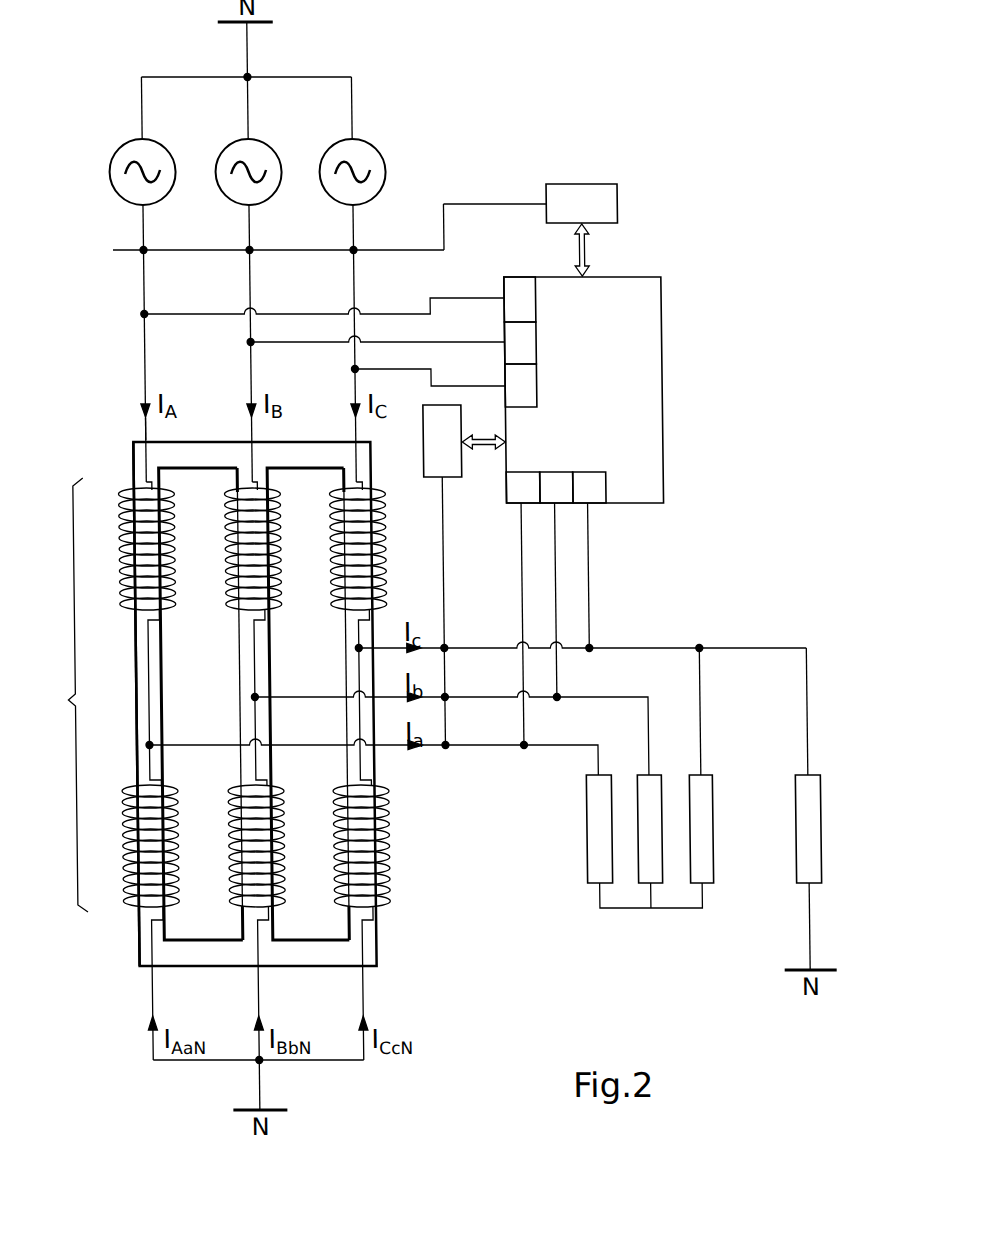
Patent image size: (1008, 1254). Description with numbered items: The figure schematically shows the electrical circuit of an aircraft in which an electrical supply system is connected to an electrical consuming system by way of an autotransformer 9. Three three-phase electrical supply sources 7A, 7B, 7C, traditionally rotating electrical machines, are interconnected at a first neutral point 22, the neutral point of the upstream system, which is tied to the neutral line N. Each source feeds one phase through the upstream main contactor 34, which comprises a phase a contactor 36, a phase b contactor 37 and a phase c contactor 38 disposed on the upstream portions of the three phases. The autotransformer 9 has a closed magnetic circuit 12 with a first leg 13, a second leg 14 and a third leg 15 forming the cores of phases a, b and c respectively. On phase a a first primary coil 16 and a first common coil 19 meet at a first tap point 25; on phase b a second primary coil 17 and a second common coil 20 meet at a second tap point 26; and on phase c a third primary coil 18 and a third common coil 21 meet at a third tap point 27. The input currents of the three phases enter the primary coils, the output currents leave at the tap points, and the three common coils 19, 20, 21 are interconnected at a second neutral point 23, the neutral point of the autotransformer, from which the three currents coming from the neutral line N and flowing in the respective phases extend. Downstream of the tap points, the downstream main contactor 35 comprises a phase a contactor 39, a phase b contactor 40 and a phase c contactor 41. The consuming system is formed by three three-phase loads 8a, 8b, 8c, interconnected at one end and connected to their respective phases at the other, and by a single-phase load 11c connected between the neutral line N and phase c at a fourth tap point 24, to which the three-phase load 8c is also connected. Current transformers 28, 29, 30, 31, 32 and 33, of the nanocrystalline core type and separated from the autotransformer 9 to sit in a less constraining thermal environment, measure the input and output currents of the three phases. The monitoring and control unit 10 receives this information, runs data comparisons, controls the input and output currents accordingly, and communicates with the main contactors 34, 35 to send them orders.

The three-phase electrical supply source 7A is at (161, 148).
The three-phase electrical supply source 7B is at (267, 148).
The three-phase electrical supply source 7C is at (371, 148).
The three-phase electrical load 8a is at (577, 835).
The three-phase electrical load 8b is at (651, 774).
The three-phase electrical load 8c is at (703, 836).
The autotransformer 9 is at (63, 695).
The monitoring and control unit 10 is at (658, 290).
The single-phase load 11c is at (786, 790).
The magnetic circuit 12 is at (128, 413).
The first leg 13 is at (129, 645).
The second leg 14 is at (232, 628).
The third leg 15 is at (343, 770).
The first primary coil 16 is at (112, 480).
The second primary coil 17 is at (222, 481).
The third primary coil 18 is at (326, 481).
The first common coil 19 is at (109, 913).
The second common coil 20 is at (214, 913).
The third common coil 21 is at (314, 913).
The first neutral point 22 is at (251, 74).
The second neutral point 23 is at (244, 1063).
The fourth tap point 24 is at (692, 646).
The first tap point 25 is at (133, 745).
The second tap point 26 is at (240, 698).
The third tap point 27 is at (345, 648).
The current transformer 28 is at (532, 296).
The current transformer 29 is at (532, 340).
The current transformer 30 is at (532, 384).
The current transformer 31 is at (517, 470).
The current transformer 32 is at (553, 470).
The current transformer 33 is at (585, 470).
The upstream main contactor 34 is at (578, 183).
The downstream main contactor 35 is at (452, 478).
The phase a contactor 36 is at (118, 249).
The phase b contactor 37 is at (243, 249).
The phase c contactor 38 is at (347, 249).
The phase a contactor 39 is at (438, 750).
The phase b contactor 40 is at (440, 700).
The phase c contactor 41 is at (440, 645).